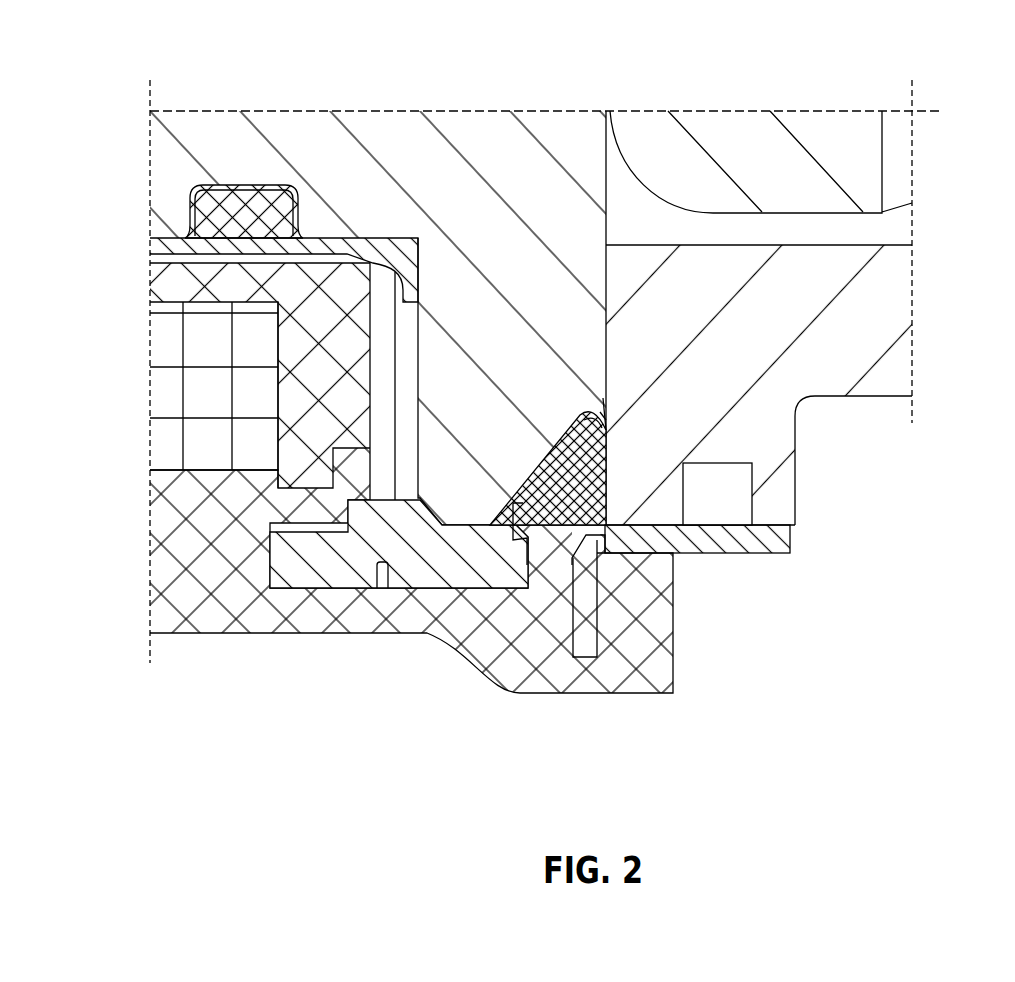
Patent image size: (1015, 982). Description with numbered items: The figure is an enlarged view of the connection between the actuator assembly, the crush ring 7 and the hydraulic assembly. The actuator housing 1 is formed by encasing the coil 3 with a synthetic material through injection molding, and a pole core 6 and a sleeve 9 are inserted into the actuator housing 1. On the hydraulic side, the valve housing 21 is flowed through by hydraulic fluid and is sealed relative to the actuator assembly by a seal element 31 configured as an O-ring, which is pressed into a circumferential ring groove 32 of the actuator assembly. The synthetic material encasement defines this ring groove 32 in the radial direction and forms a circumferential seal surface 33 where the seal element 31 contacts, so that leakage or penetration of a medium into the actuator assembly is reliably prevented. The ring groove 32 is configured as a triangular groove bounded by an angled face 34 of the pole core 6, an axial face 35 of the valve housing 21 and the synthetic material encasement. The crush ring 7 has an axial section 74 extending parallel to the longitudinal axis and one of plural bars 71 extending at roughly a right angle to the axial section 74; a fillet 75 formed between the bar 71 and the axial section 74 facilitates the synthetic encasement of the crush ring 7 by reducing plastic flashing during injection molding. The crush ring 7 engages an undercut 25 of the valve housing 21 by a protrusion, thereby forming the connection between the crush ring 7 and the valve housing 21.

The actuator housing 1 is at (368, 628).
The coil 3 is at (192, 384).
The pole core 6 is at (280, 145).
The crush ring 7 is at (704, 571).
The sleeve 9 is at (152, 254).
The valve housing 21 is at (823, 383).
The undercut 25 is at (733, 505).
The seal element 31 is at (560, 473).
The circumferential ring groove 32 is at (604, 401).
The circumferential seal surface 33 is at (558, 523).
The angled face 34 is at (606, 413).
The axial face 35 is at (605, 487).
The bar 71 is at (583, 652).
The axial section 74 is at (735, 557).
The fillet 75 is at (568, 549).